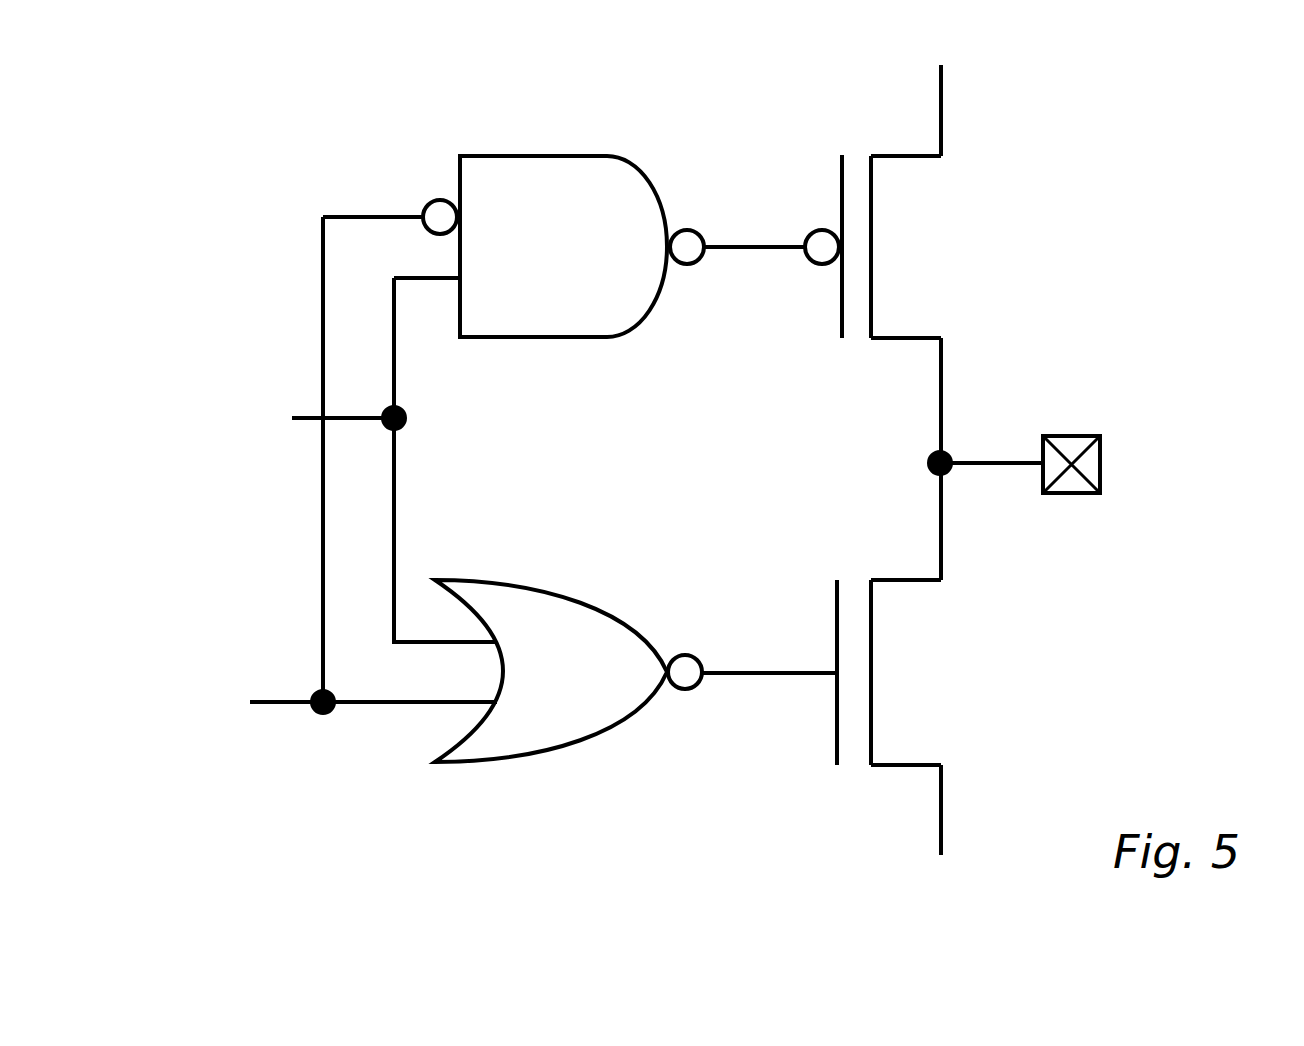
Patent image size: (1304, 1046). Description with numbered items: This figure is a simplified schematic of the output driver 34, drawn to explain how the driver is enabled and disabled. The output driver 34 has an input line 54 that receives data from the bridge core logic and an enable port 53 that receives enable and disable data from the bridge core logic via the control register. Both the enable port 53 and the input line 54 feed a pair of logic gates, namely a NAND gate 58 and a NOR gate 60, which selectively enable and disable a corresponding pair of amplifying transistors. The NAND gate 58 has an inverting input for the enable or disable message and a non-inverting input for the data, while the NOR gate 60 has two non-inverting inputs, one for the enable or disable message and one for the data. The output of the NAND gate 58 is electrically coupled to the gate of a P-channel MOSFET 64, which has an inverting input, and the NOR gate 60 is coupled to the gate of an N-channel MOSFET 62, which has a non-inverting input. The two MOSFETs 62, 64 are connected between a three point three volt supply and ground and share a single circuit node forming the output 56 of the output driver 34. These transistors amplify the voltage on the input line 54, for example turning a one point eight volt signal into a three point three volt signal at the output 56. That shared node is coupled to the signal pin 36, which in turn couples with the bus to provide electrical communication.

The output driver 34 is at (1103, 90).
The signal pin 36 is at (1078, 493).
The enable port 53 is at (300, 672).
The input line 54 is at (300, 458).
The output 56 is at (976, 435).
The NAND gate 58 is at (560, 156).
The NOR gate 60 is at (574, 600).
The N-channel MOSFET 62 is at (952, 713).
The P-channel MOSFET 64 is at (952, 213).